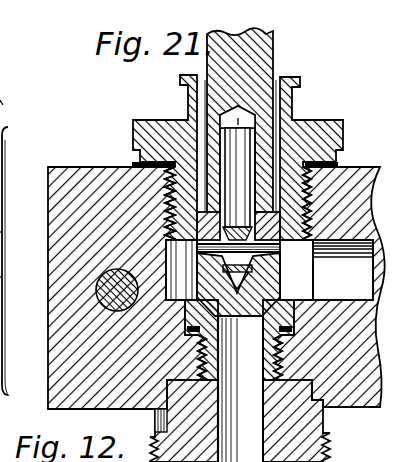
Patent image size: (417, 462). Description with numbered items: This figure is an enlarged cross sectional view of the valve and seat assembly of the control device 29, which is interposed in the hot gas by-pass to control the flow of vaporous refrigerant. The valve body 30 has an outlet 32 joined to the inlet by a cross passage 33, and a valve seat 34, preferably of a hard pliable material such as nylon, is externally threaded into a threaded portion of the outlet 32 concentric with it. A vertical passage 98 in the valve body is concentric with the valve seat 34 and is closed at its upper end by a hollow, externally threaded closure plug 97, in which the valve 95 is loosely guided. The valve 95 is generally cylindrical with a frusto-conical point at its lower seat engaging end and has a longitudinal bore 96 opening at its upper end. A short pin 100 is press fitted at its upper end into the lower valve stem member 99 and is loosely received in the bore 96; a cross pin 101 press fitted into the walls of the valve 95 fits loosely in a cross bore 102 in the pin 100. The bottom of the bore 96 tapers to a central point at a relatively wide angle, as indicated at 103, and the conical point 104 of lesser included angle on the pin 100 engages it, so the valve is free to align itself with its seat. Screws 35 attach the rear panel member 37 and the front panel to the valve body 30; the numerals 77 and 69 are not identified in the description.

In FIG. 21, the valve body 30 is at (72, 174).
In FIG. 21, the cross passage 33 is at (357, 279).
In FIG. 21, the screws 35 is at (140, 289).
In FIG. 21, the closure plug 97 is at (347, 121).
In FIG. 21, the lower valve stem member 99 is at (268, 54).
In FIG. 21, the pin 100 is at (240, 146).
In FIG. 21, the cross bore 102 is at (252, 212).
In FIG. 21, the valve 95 is at (196, 302).
In FIG. 21, the cross pin 101 is at (272, 249).
In FIG. 21, the longitudinal bore 96 is at (281, 284).
In FIG. 21, the vertical passage 98 is at (175, 258).
In FIG. 21, the valve seat 34 is at (199, 353).
In FIG. 21, the tapered bottom of bore 103 is at (200, 316).
In FIG. 21, the conical point 104 is at (254, 316).
In FIG. 21, the outlet 32 is at (250, 445).
In FIG. 12, the control device 29 is at (13, 211).
In FIG. 12, the rear panel member 37 is at (11, 93).
In FIG. 12, the fig 12 part 77 is at (3, 232).
In FIG. 12, the fig 12 part 69 is at (3, 277).